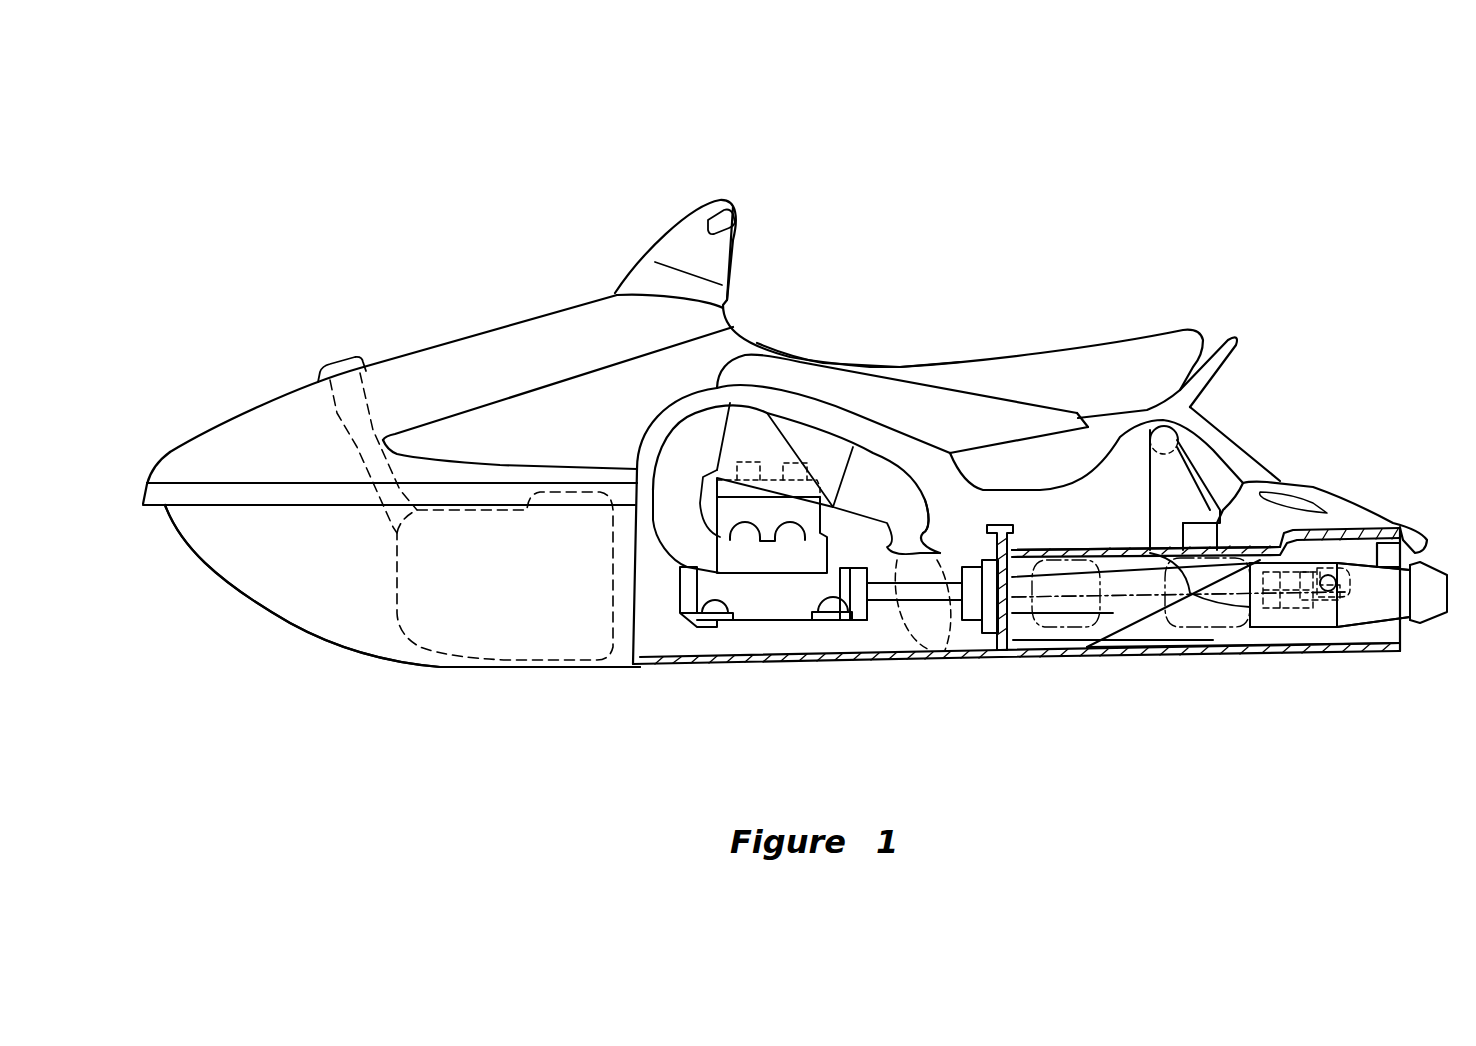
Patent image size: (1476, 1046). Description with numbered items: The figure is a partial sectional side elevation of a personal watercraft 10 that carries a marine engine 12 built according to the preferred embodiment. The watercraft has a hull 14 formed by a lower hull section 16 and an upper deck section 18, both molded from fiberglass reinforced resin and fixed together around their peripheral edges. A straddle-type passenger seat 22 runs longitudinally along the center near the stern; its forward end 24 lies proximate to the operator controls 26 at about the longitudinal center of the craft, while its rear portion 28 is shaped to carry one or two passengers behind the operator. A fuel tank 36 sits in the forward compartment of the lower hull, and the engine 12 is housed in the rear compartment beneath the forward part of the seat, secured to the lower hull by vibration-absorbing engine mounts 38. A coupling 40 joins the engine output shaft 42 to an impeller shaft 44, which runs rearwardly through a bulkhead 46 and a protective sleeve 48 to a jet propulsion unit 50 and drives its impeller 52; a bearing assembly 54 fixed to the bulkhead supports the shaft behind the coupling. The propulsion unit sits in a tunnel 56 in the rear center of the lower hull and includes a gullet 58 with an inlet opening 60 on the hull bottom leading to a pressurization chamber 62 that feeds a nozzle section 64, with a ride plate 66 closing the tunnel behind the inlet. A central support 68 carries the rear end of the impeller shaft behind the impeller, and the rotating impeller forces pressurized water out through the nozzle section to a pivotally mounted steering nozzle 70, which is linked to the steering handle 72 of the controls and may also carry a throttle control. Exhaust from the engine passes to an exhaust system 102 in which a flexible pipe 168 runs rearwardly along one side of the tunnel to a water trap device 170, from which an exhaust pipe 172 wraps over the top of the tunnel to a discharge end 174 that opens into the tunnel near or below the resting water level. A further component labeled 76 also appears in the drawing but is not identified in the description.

The personal watercraft 10 is at (880, 243).
The marine engine 12 is at (710, 638).
The hull 14 is at (471, 362).
The lower hull section 16 is at (313, 593).
The upper deck section 18 is at (263, 433).
The passenger seat 22 is at (1035, 373).
The forward end of the seat 24 is at (867, 363).
The controls 26 is at (717, 180).
The rear portion of the seat 28 is at (1167, 330).
The fuel tank 36 is at (490, 622).
The engine mounts 38 is at (847, 617).
The coupling 40 is at (873, 620).
The engine output shaft 42 is at (833, 600).
The impeller shaft 44 is at (937, 620).
The bulkhead 46 is at (1015, 560).
The protective sleeve 48 is at (1113, 595).
The jet propulsion unit 50 is at (1237, 728).
The impeller 52 is at (1275, 615).
The bearing assembly 54 is at (977, 580).
The tunnel 56 is at (1050, 540).
The gullet 58 is at (1250, 630).
The inlet opening 60 is at (1148, 640).
The pressurization chamber 62 is at (1318, 615).
The nozzle section 64 is at (1430, 567).
The ride plate 66 is at (1215, 655).
The central support 68 is at (1310, 560).
The steering nozzle 70 is at (1420, 615).
The steering handle 72 is at (735, 208).
The engine mount 76 is at (747, 600).
The exhaust system 102 is at (780, 440).
The flexible pipe 168 is at (940, 553).
The water trap device 170 is at (1060, 627).
The exhaust pipe 172 is at (1190, 470).
The discharge end 174 is at (1327, 557).